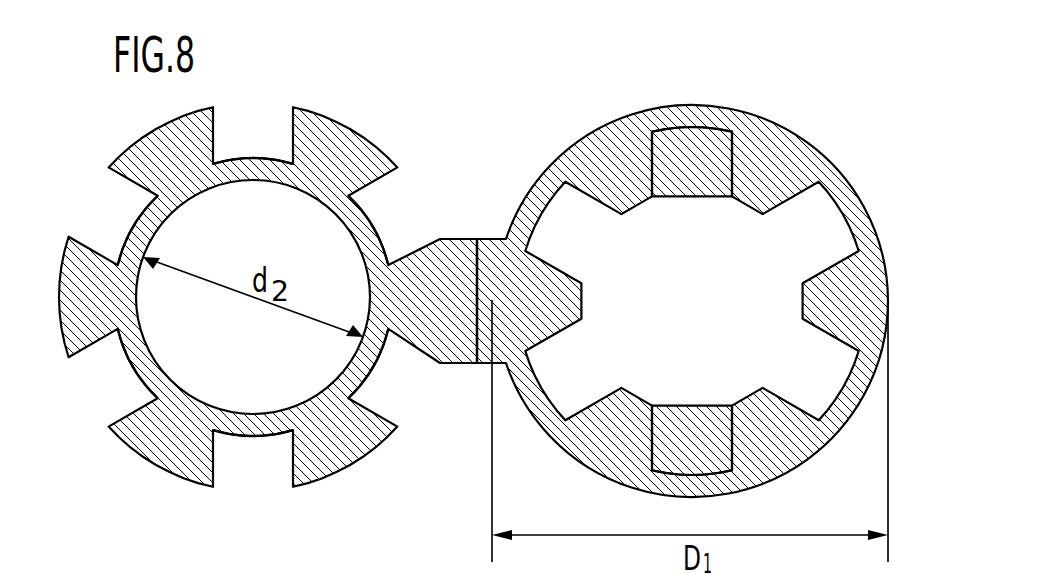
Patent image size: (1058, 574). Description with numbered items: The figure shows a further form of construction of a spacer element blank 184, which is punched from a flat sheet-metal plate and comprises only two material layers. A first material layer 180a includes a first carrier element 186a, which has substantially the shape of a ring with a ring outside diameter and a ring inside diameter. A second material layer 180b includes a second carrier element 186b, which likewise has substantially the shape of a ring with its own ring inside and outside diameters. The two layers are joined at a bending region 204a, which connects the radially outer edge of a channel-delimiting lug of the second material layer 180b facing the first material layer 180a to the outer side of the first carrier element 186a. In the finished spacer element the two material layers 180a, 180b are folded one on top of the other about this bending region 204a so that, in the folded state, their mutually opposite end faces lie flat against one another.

The second material layer 180b is at (353, 147).
The second carrier element 186b is at (247, 162).
The spacer element blank 184 is at (861, 190).
The first material layer 180a is at (765, 173).
The first carrier element 186a is at (682, 126).
The bending region 204a is at (477, 239).